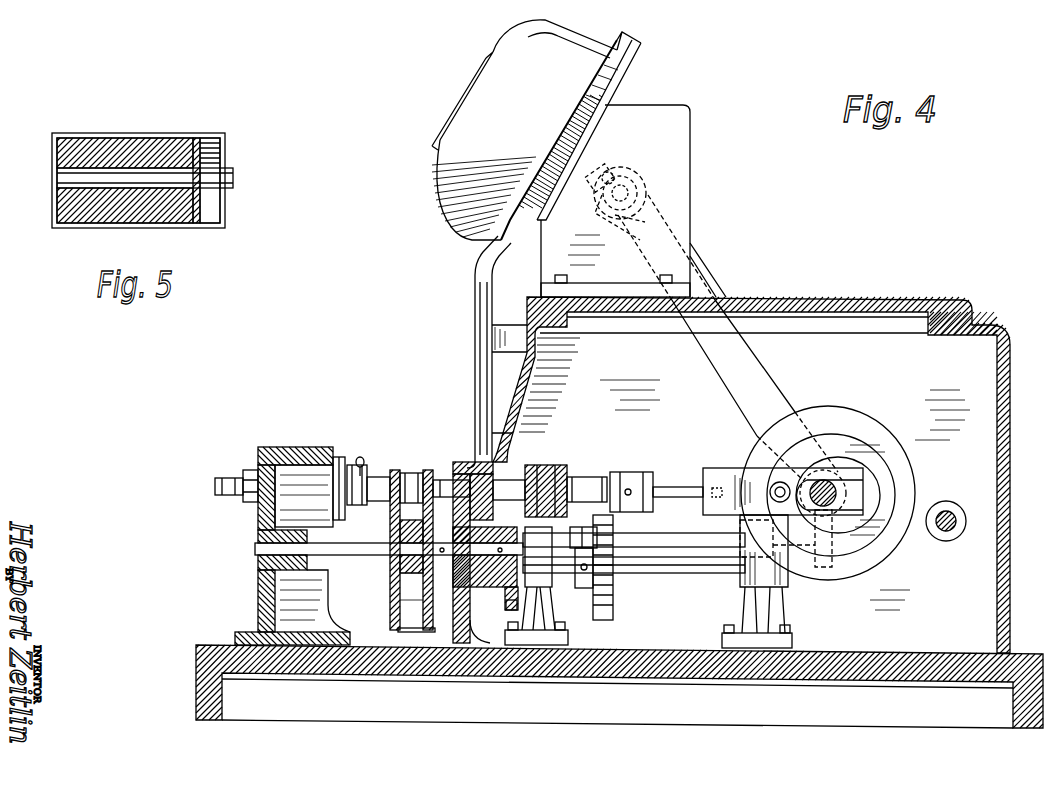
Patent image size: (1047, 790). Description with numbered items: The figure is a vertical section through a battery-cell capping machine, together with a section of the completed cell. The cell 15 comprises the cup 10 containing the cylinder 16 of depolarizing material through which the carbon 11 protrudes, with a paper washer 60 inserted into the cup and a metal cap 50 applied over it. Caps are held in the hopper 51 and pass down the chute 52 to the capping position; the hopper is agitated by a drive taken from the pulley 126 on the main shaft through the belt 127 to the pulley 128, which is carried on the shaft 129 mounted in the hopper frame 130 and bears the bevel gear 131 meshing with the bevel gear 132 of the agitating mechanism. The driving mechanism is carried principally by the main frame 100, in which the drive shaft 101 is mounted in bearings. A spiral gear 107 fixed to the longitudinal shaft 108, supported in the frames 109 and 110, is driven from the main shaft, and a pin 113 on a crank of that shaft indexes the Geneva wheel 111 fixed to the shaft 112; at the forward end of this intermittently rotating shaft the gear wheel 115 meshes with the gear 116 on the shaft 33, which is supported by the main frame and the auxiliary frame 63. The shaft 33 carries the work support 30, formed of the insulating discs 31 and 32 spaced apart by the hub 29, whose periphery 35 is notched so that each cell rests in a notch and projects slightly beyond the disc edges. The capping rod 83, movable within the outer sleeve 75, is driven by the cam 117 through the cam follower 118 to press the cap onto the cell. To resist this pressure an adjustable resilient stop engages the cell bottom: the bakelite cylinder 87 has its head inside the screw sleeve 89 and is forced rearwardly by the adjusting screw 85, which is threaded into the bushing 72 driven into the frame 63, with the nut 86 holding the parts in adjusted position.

In FIG. 5, the cup 10 is at (72, 225).
In FIG. 5, the cylinder of depolarizing material 16 is at (123, 147).
In FIG. 5, the metal cap 50 is at (233, 188).
In FIG. 5, the carbon 11 is at (208, 172).
In FIG. 5, the paper washer 60 is at (207, 217).
In FIG. 4, the hopper 51 is at (536, 130).
In FIG. 4, the chute 52 is at (480, 360).
In FIG. 4, the main frame 100 is at (1000, 533).
In FIG. 4, the drive shaft 101 is at (945, 531).
In FIG. 4, the hopper frame 130 is at (688, 160).
In FIG. 4, the pulley 128 is at (643, 186).
In FIG. 4, the shaft 129 is at (628, 206).
In FIG. 4, the bevel gear 132 is at (617, 163).
In FIG. 4, the bevel gear 131 is at (612, 222).
In FIG. 4, the belt 127 is at (782, 383).
In FIG. 4, the cam 117 is at (840, 413).
In FIG. 4, the cam follower 118 is at (722, 468).
In FIG. 4, the pulley 126 is at (845, 495).
In FIG. 4, the spiral gear 107 is at (822, 572).
In FIG. 4, the frame 109 is at (780, 612).
In FIG. 4, the frame 110 is at (565, 640).
In FIG. 4, the Geneva wheel 111 is at (613, 596).
In FIG. 4, the pin 113 is at (582, 535).
In FIG. 4, the shaft 108 is at (670, 538).
In FIG. 4, the shaft 112 is at (686, 569).
In FIG. 4, the gear 116 is at (507, 589).
In FIG. 4, the gear wheel 115 is at (508, 608).
In FIG. 4, the outer sleeve 75 is at (591, 478).
In FIG. 4, the capping rod 83 is at (679, 488).
In FIG. 4, the auxiliary frame 63 is at (258, 578).
In FIG. 4, the nut 86 is at (250, 475).
In FIG. 4, the adjusting screw 85 is at (232, 480).
In FIG. 4, the bushing 72 is at (338, 510).
In FIG. 4, the cylinder 87 is at (372, 475).
In FIG. 4, the screw sleeve 89 is at (360, 457).
In FIG. 4, the battery cell 15 is at (412, 473).
In FIG. 4, the shaft 33 is at (355, 547).
In FIG. 4, the work support 30 is at (395, 567).
In FIG. 4, the insulating disc 31 is at (392, 605).
In FIG. 4, the insulating disc 32 is at (433, 608).
In FIG. 4, the hub 29 is at (410, 580).
In FIG. 4, the periphery 35 is at (432, 631).